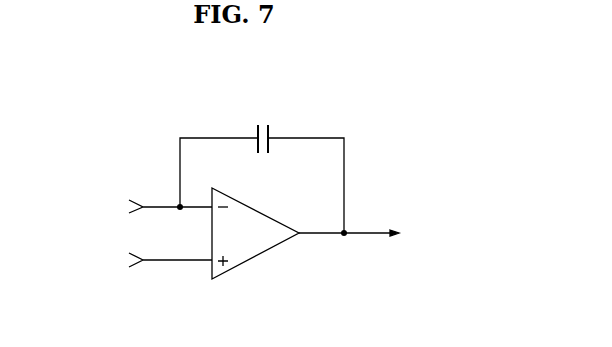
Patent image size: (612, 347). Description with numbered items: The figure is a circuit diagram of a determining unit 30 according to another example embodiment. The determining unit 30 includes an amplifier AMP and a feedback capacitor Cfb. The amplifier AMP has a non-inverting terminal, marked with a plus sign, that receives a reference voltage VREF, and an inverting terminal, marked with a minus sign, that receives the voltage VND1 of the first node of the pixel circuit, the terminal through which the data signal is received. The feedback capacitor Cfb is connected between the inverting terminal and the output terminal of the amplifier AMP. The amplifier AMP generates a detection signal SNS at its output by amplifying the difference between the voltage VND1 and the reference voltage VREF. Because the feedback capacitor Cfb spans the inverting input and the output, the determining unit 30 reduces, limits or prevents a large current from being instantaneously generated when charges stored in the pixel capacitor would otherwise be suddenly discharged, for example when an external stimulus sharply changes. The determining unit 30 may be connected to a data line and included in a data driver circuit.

The determining unit 30 is at (265, 182).
The amplifier AMP is at (255, 233).
The feedback capacitor Cfb is at (262, 166).
The voltage of the first node VND1 is at (144, 207).
The reference voltage VREF is at (144, 260).
The detection signal SNS is at (368, 233).